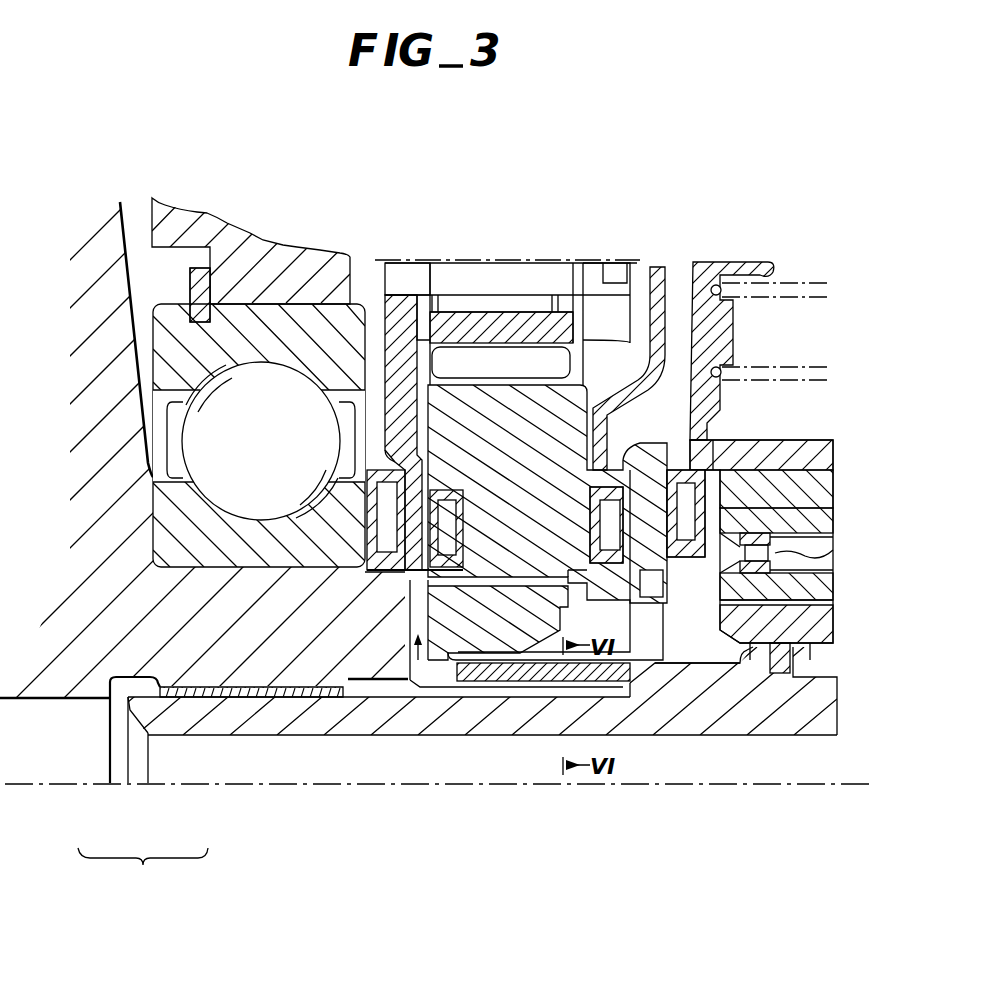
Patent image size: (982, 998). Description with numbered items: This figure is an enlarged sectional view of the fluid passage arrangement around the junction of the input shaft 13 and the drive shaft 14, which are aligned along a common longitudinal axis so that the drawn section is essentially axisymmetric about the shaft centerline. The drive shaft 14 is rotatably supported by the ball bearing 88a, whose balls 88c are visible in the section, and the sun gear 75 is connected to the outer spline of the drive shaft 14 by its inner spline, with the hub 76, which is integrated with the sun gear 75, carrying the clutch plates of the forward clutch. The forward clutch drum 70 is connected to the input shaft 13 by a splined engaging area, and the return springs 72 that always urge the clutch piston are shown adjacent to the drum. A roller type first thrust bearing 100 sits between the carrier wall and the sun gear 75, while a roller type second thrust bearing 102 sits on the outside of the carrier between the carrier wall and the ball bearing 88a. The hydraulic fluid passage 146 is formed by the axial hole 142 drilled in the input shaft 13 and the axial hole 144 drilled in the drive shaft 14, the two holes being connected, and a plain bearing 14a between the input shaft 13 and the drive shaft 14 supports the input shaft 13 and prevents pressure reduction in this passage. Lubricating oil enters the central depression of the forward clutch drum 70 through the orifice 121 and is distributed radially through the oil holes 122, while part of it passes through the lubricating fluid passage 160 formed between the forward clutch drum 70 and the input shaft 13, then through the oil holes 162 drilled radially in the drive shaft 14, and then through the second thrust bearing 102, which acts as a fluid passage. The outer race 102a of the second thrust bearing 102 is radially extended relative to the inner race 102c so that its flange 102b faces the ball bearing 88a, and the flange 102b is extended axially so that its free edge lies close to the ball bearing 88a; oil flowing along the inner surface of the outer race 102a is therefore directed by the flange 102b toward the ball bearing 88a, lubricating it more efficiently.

The ball bearing 88a is at (287, 302).
The bearing 88c is at (281, 453).
The second thrust bearing 102 is at (374, 442).
The outer race 102a is at (440, 400).
The flange 102b is at (325, 545).
The inner race 102c is at (398, 700).
The sun gear 75 is at (513, 403).
The hub 76 is at (650, 265).
The return springs 72 is at (783, 282).
The orifice 121 is at (833, 550).
The oil holes 122 is at (720, 727).
The forward clutch drum 70 is at (640, 615).
The lubricating fluid passage 160 is at (528, 690).
The first thrust bearing 100 is at (505, 688).
The oil holes 162 is at (480, 693).
The drive shaft 14 is at (257, 660).
The plain bearing 14a is at (370, 677).
The input shaft 13 is at (680, 727).
The axial hole 144 is at (70, 743).
The axial hole 142 is at (195, 745).
The hydraulic fluid passage 146 is at (143, 871).